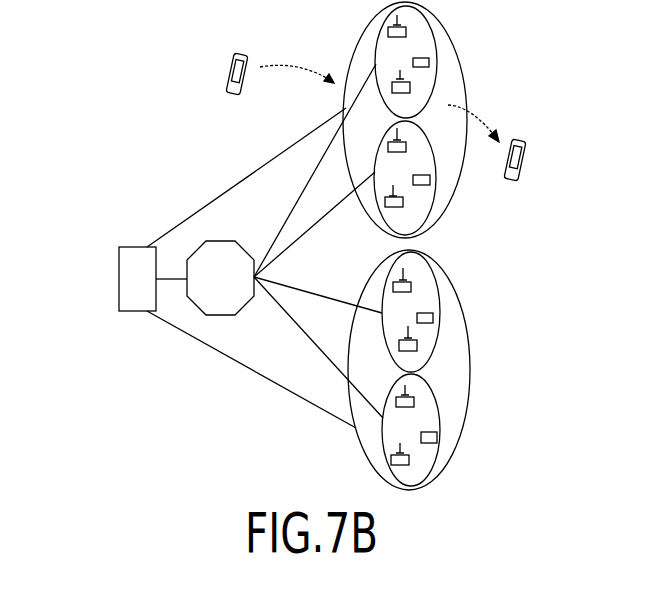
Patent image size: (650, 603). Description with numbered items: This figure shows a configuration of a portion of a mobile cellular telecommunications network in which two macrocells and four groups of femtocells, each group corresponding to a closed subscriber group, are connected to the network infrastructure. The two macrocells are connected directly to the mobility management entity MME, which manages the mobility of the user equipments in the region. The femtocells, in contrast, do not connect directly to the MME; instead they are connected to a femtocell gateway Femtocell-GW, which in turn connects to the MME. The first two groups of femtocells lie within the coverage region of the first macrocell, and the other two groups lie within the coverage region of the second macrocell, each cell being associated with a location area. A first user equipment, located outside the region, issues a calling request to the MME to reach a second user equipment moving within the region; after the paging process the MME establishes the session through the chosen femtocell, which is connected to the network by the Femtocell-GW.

The mobility management entity MME is at (137, 279).
The femtocell gateway Femtocell-GW is at (220, 278).